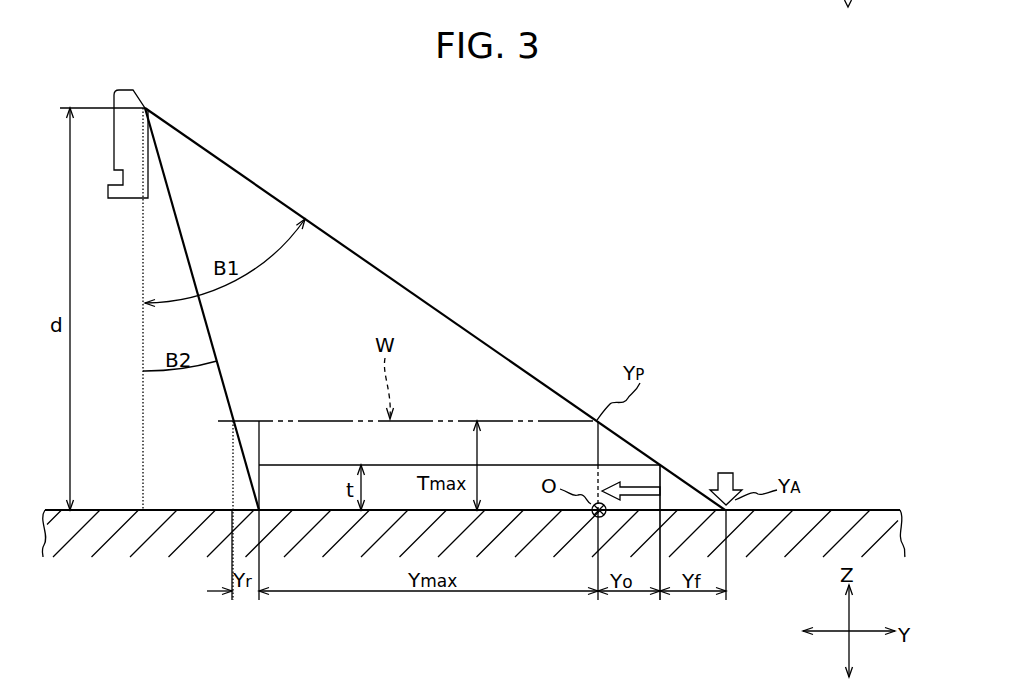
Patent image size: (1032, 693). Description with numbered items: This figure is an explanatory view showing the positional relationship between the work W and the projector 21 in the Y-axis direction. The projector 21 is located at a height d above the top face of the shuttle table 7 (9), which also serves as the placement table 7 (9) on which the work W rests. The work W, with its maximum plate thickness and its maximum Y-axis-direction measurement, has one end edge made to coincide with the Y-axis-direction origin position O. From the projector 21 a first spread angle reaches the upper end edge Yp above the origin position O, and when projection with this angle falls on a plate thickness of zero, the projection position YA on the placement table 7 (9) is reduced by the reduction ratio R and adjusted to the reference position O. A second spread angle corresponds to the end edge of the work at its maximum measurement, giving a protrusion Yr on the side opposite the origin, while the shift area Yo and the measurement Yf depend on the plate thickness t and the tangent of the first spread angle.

The projector 21 is at (138, 88).
The shuttle table 7 is at (473, 510).
The placement table 9 is at (838, 522).